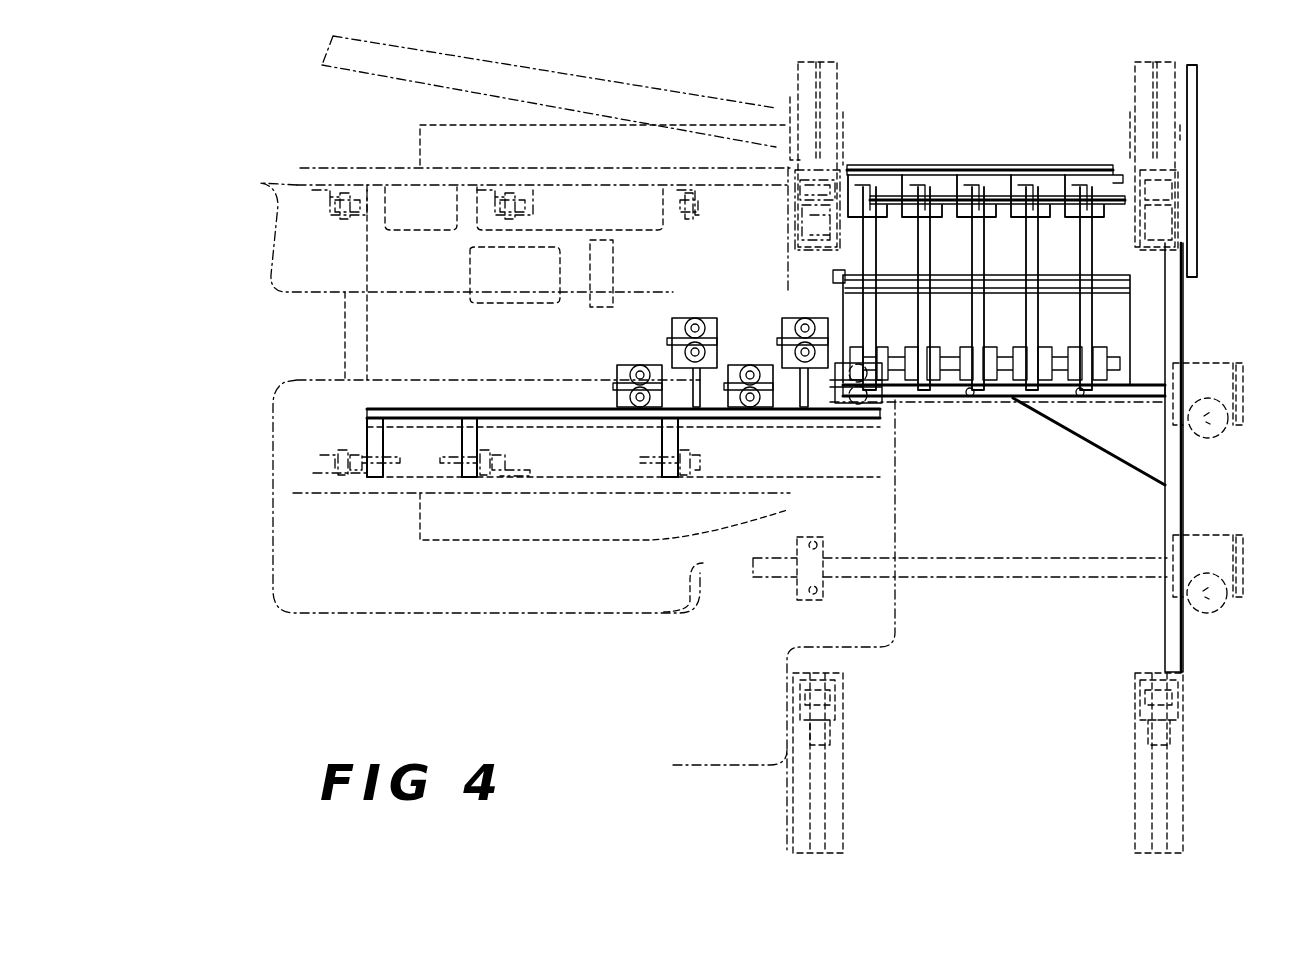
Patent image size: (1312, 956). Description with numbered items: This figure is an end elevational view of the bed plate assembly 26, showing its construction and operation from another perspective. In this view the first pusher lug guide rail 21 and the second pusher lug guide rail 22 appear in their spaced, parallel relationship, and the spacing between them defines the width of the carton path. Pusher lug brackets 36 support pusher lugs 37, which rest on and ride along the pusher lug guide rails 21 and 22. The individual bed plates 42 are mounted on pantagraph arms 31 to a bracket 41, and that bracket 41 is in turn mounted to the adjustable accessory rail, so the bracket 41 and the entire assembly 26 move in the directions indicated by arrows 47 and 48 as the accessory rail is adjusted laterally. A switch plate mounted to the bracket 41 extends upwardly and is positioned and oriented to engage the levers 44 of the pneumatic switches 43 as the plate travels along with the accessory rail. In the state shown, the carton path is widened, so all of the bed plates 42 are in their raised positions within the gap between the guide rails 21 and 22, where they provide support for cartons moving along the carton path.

The first pusher lug guide rail 21 is at (840, 145).
The second pusher lug guide rail 22 is at (1180, 170).
The bed plate assembly 26 is at (1000, 106).
The pantagraph arms 31 is at (997, 336).
The pusher lug brackets 36 is at (790, 97).
The pusher lugs 37 is at (825, 62).
The bracket 41 is at (1185, 492).
The bed plates 42 is at (1110, 168).
The pneumatic switches 43 is at (668, 328).
The levers 44 is at (634, 400).
The arrow 47 is at (723, 298).
The arrow 48 is at (1285, 295).